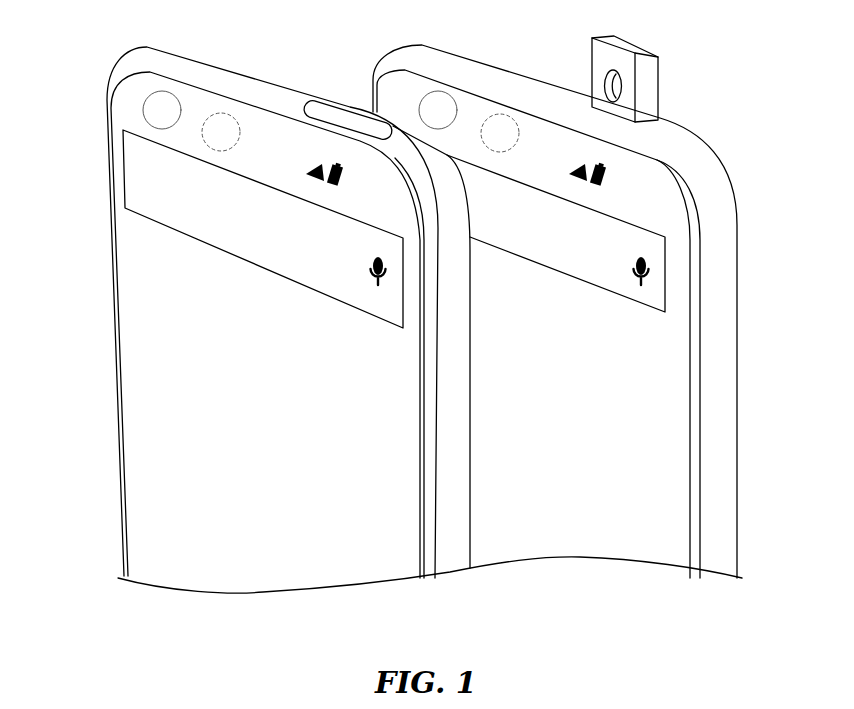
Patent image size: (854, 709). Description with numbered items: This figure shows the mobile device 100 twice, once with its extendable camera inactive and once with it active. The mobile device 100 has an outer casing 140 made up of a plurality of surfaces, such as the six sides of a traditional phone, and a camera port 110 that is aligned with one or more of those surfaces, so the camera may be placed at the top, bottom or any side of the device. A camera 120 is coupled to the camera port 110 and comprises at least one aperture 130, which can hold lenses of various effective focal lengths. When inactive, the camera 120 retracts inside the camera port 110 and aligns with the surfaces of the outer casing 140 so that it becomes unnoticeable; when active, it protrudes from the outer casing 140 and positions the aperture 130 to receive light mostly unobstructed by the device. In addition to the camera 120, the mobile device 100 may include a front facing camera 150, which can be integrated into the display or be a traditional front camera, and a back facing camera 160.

The mobile device 100 is at (417, 309).
The camera port 110 is at (338, 110).
The camera 120 is at (634, 78).
The aperture 130 is at (606, 76).
The outer casing 140 is at (115, 70).
The front facing camera 150 is at (155, 116).
The back facing camera 160 is at (218, 122).